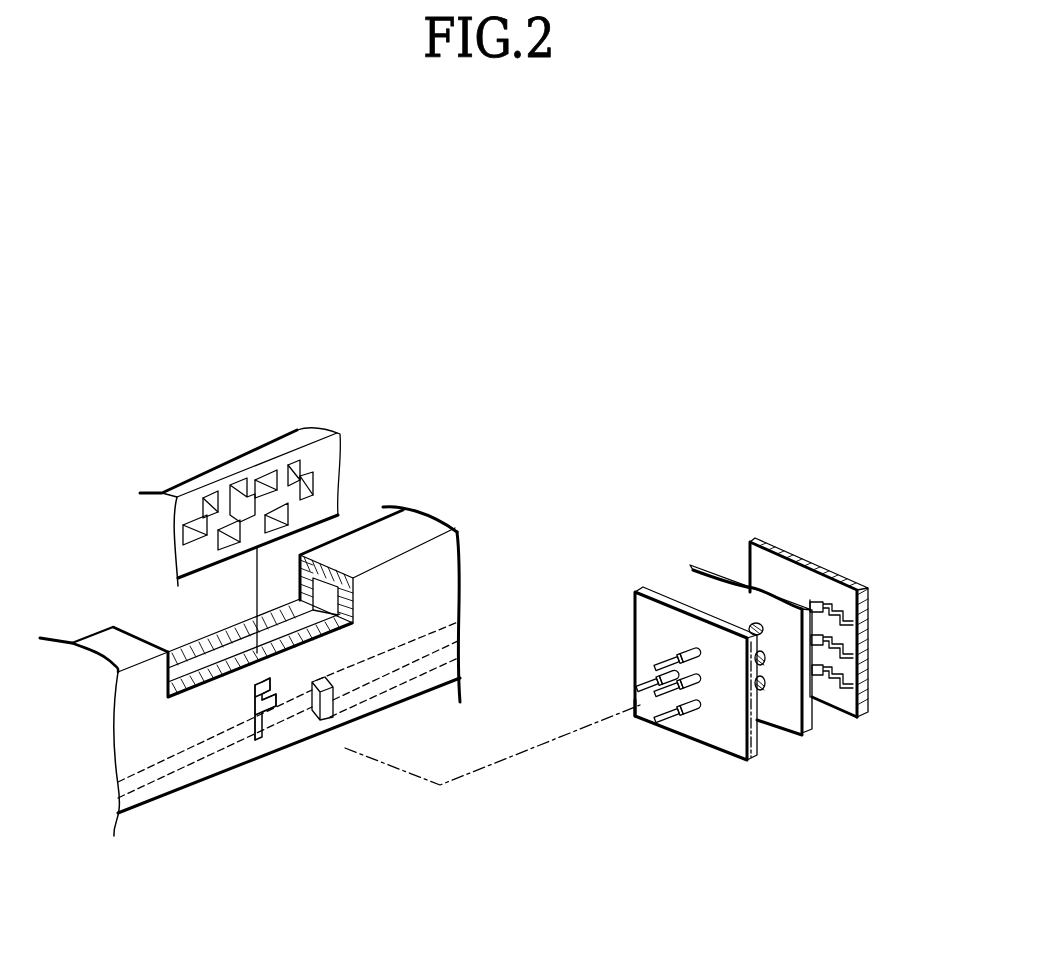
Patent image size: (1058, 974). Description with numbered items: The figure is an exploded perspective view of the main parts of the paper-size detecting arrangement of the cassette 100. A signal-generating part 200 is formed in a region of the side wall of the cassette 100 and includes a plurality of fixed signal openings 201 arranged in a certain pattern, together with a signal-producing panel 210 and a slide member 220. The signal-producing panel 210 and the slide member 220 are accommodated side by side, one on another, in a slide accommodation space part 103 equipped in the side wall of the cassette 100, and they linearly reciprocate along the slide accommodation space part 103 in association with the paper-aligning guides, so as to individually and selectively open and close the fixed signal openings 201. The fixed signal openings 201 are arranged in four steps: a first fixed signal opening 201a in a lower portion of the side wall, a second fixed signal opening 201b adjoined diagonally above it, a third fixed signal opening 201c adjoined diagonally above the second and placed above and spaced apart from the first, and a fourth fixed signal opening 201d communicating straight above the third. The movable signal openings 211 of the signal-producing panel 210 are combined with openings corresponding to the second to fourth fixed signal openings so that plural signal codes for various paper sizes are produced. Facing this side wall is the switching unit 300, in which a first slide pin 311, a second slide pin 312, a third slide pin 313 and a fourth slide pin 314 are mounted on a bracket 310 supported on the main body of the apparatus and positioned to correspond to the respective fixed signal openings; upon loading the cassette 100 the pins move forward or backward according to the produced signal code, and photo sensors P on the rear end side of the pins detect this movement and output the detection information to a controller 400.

The cassette 100 is at (108, 628).
The slide accommodation space part 103 is at (205, 652).
The signal-generating part 200 is at (386, 470).
The fixed signal openings 201 is at (232, 715).
The first fixed signal opening 201a is at (265, 690).
The second fixed signal opening 201b is at (278, 702).
The third fixed signal opening 201c is at (263, 687).
The fourth fixed signal opening 201d is at (268, 690).
The signal-producing panel 210 is at (232, 455).
The movable signal openings 211 is at (212, 500).
The slide member 220 is at (398, 672).
The switching unit 300 is at (702, 673).
The bracket 310 is at (693, 587).
The first slide pin 311 is at (668, 730).
The second slide pin 312 is at (636, 718).
The third slide pin 313 is at (636, 687).
The fourth slide pin 314 is at (663, 660).
The controller 400 is at (832, 585).
The photo sensors P is at (820, 607).